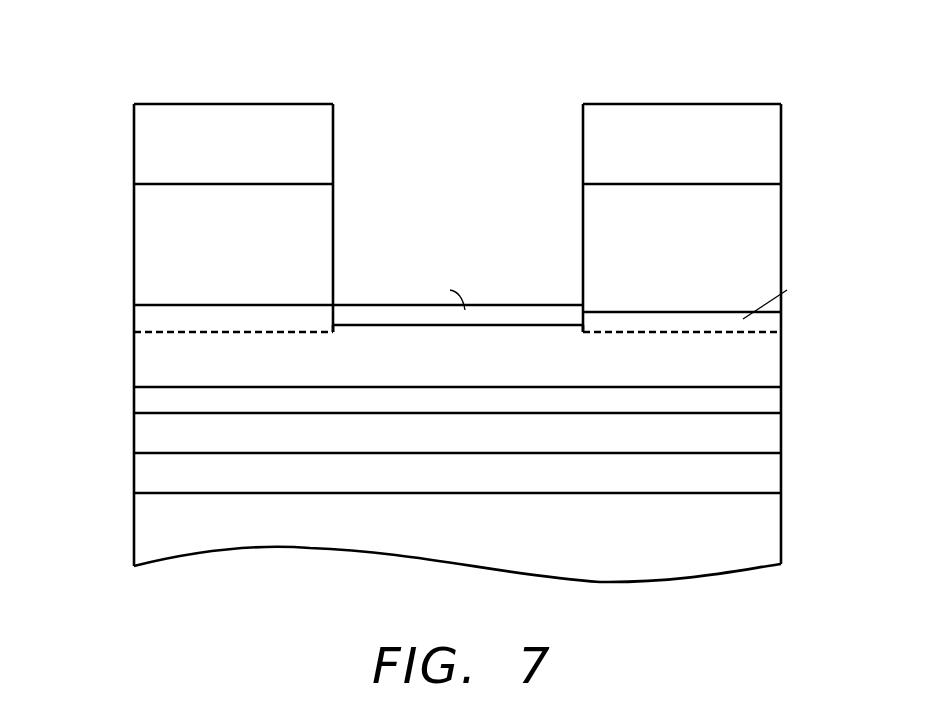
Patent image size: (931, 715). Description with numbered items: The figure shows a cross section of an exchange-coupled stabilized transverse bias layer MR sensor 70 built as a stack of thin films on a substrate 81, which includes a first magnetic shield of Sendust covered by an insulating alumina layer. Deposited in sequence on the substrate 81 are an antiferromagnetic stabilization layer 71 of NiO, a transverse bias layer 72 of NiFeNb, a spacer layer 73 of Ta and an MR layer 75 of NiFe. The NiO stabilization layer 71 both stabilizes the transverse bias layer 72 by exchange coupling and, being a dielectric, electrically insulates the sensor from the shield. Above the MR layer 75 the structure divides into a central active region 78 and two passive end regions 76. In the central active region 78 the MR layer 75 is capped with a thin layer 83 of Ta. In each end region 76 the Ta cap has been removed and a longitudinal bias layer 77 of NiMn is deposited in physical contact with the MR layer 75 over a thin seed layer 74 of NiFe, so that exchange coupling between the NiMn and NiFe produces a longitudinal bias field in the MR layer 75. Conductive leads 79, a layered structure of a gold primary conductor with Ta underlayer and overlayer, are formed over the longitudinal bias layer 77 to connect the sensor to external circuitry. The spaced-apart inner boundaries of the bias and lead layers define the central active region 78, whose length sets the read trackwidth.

The MR sensor 70 is at (110, 394).
The antiferromagnetic stabilization layer 71 is at (781, 475).
The transverse bias layer 72 is at (781, 435).
The spacer layer 73 is at (781, 400).
The seed layer 74 is at (781, 322).
The MR layer 75 is at (781, 357).
The end regions 76 is at (238, 104).
The longitudinal bias layer 77 is at (320, 217).
The central active region 78 is at (508, 95).
The conductive leads 79 is at (323, 160).
The substrate 81 is at (781, 535).
The capping layer 83 is at (516, 305).